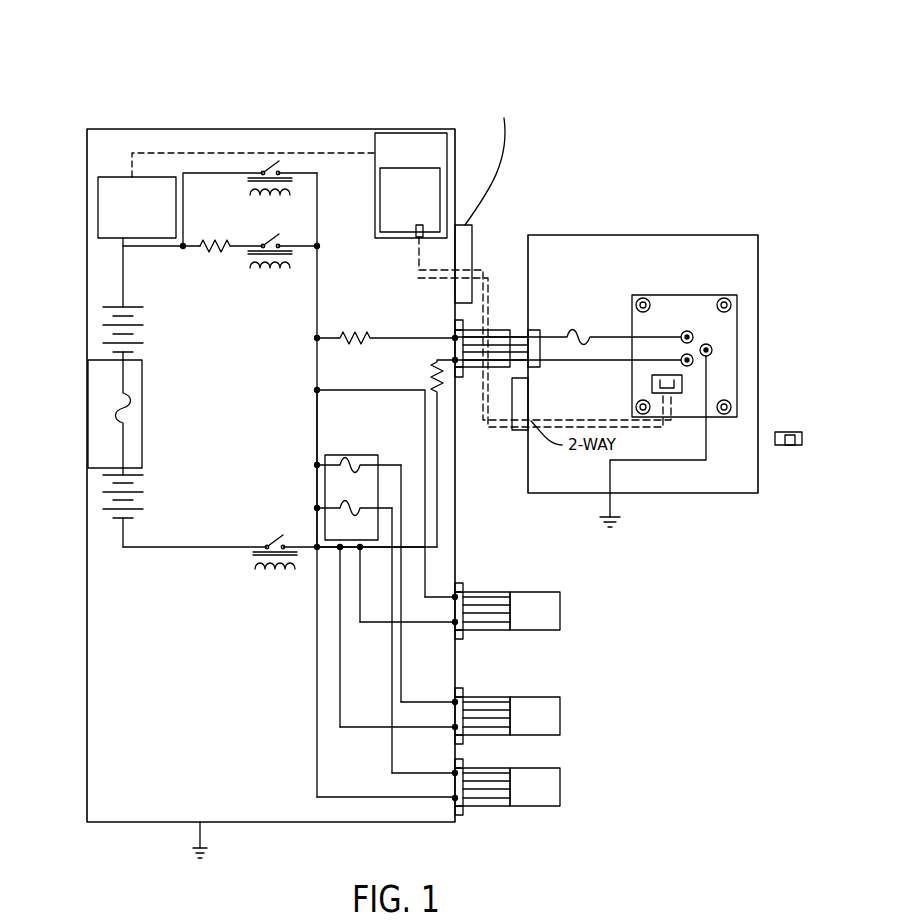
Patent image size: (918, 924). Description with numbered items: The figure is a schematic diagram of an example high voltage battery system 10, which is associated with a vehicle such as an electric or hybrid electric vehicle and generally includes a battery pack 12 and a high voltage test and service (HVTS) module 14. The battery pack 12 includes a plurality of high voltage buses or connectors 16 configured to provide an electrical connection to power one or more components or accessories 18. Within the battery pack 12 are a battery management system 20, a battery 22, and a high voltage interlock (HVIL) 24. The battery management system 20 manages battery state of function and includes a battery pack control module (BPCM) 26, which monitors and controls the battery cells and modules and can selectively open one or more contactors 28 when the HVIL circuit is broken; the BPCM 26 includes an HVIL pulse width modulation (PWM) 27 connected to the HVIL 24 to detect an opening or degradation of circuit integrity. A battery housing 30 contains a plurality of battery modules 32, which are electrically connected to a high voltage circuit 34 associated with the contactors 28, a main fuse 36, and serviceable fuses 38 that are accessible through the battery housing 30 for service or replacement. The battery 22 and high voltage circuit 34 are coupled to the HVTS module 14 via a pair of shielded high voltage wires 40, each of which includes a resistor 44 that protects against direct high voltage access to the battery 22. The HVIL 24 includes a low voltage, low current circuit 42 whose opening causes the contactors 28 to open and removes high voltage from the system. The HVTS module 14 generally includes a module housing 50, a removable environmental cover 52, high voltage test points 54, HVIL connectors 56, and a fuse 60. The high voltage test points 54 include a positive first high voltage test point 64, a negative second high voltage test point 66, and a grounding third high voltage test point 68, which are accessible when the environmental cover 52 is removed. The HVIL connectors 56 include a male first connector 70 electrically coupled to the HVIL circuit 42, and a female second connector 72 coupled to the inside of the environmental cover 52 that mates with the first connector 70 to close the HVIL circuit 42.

The high voltage battery system 10 is at (720, 84).
The battery pack 12 is at (110, 106).
The high voltage test and service (HVTS) module 14 is at (731, 216).
The high voltage buses or connectors 16 is at (499, 324).
The components or accessories 18 is at (560, 612).
The battery management system 20 is at (98, 205).
The battery 22 is at (86, 331).
The high voltage interlock (HVIL) 24 is at (411, 262).
The battery pack control module (BPCM) 26 is at (410, 133).
The HVIL pulse width modulation (PWM) 27 is at (440, 168).
The contactors 28 is at (283, 162).
The battery housing 30 is at (87, 645).
The battery modules 32 is at (147, 343).
The high voltage circuit 34 is at (206, 548).
The main fuse 36 is at (142, 440).
The serviceable fuses 38 is at (325, 497).
The shielded high voltage cables or wires 40 is at (418, 336).
The low voltage, low current circuit 42 is at (483, 262).
The resistor 44 is at (339, 346).
The module housing 50 is at (677, 235).
The removable environmental cover 52 is at (735, 334).
The high voltage test points 54 is at (712, 322).
The HVIL connectors 56 is at (682, 401).
The fuse 60 is at (564, 292).
The positive first high voltage test point 64 is at (681, 337).
The negative second high voltage test point 66 is at (681, 361).
The grounding third high voltage test point 68 is at (712, 352).
The first connector 70 is at (652, 392).
The second connector 72 is at (790, 432).